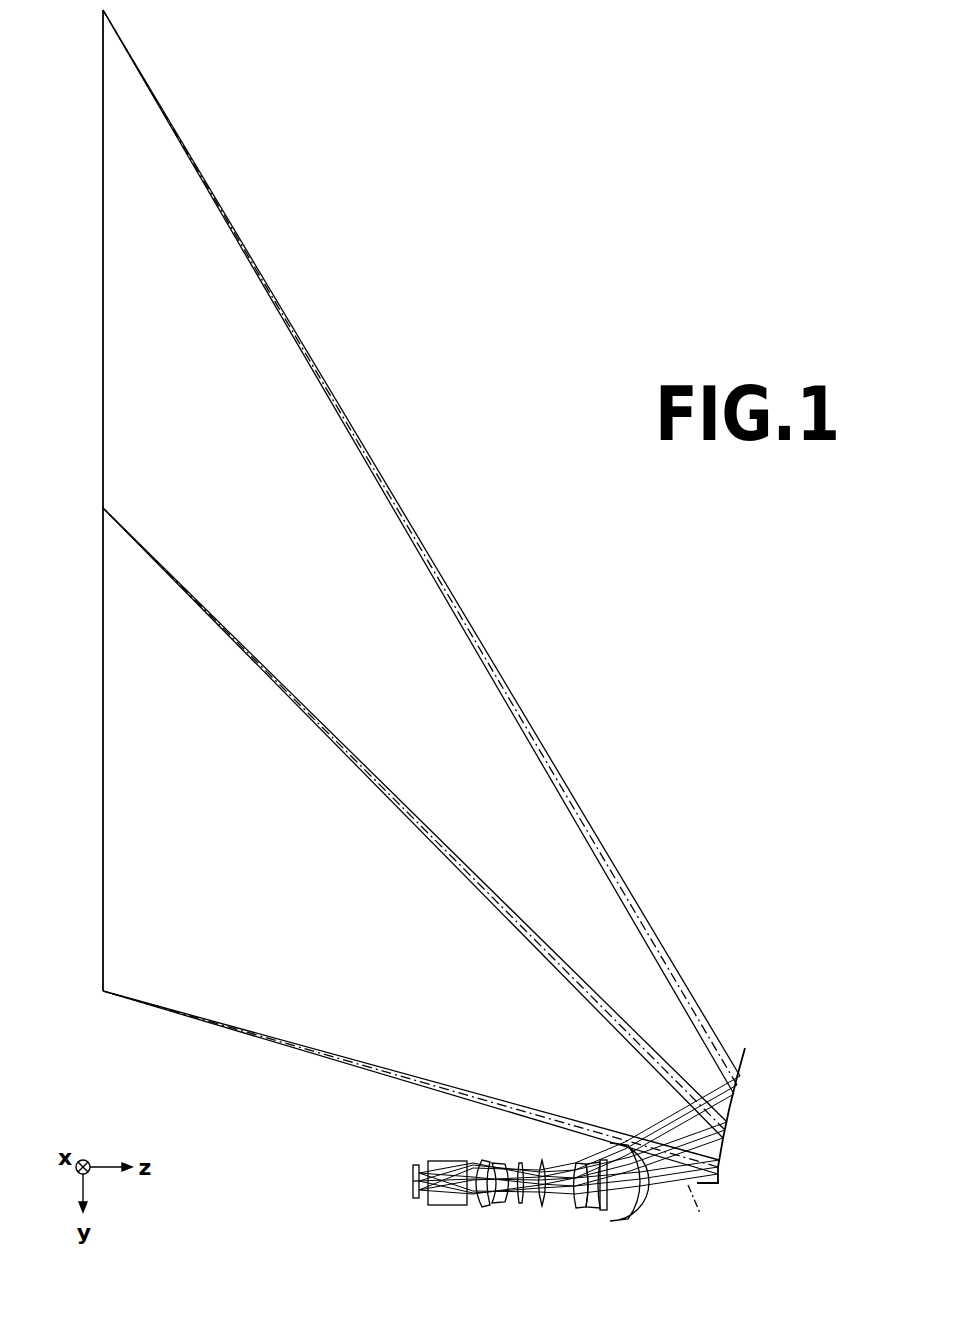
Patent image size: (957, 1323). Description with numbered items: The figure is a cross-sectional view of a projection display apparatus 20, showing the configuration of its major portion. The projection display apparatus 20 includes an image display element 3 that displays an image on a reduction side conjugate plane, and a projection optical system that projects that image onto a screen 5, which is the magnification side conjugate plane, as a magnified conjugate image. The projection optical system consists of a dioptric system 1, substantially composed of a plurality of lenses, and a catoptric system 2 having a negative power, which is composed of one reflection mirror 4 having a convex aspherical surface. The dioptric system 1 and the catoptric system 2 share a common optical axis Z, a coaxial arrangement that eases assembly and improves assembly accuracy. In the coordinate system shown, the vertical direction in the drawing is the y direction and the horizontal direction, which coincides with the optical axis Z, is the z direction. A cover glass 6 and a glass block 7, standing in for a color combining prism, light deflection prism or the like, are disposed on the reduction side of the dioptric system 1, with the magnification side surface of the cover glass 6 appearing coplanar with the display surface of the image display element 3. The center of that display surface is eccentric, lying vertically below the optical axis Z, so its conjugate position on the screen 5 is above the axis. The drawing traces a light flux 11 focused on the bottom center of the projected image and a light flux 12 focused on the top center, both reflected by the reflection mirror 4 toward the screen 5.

The dioptric system 1 is at (647, 1228).
The catoptric system 2 is at (746, 1115).
The image display element 3 is at (412, 1183).
The reflection mirror 4 is at (746, 1053).
The screen 5 is at (103, 183).
The cover glass 6 is at (415, 1199).
The glass block 7 is at (447, 1206).
The light flux 11 is at (388, 1067).
The light flux 12 is at (495, 655).
The projection display apparatus 20 is at (489, 205).
The optical axis Z is at (701, 1215).